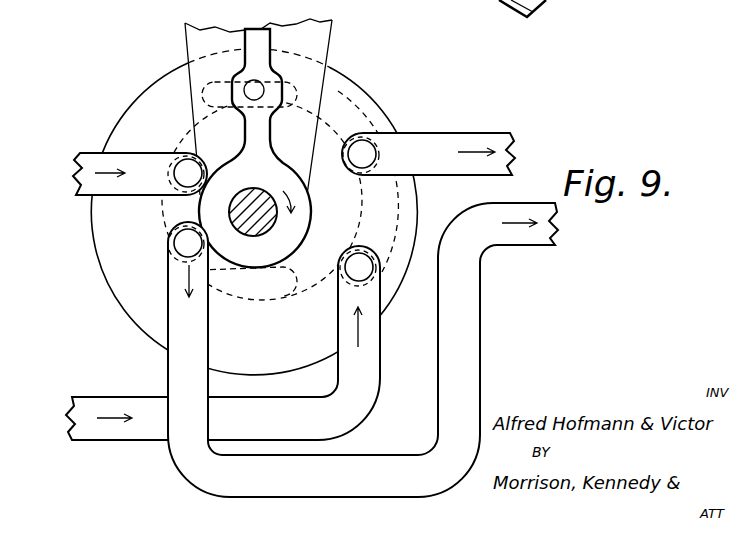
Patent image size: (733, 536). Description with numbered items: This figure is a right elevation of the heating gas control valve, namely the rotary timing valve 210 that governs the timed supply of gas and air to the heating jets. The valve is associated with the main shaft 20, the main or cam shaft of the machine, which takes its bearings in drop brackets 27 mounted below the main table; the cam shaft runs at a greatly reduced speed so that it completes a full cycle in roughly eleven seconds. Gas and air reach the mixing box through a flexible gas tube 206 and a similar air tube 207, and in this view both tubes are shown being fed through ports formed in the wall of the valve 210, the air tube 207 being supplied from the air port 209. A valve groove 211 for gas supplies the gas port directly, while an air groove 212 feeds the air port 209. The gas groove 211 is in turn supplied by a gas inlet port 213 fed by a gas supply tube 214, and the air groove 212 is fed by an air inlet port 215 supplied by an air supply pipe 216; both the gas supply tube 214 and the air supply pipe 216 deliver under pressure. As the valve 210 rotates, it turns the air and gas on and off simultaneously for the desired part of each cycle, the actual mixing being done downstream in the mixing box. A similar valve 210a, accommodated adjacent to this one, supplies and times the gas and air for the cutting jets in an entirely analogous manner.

The main shaft 20 is at (250, 150).
The drop bracket 27 is at (313, 44).
The gas tube 206 is at (428, 146).
The air tube 207 is at (382, 350).
The air port 209 is at (166, 256).
The rotary timing valve 210 is at (249, 210).
The valve 210a is at (147, 70).
The valve groove for gas 211 is at (378, 215).
The air groove 212 is at (275, 302).
The gas inlet port 213 is at (352, 265).
The gas supply tube 214 is at (366, 404).
The air inlet port 215 is at (204, 163).
The air supply pipe 216 is at (113, 130).